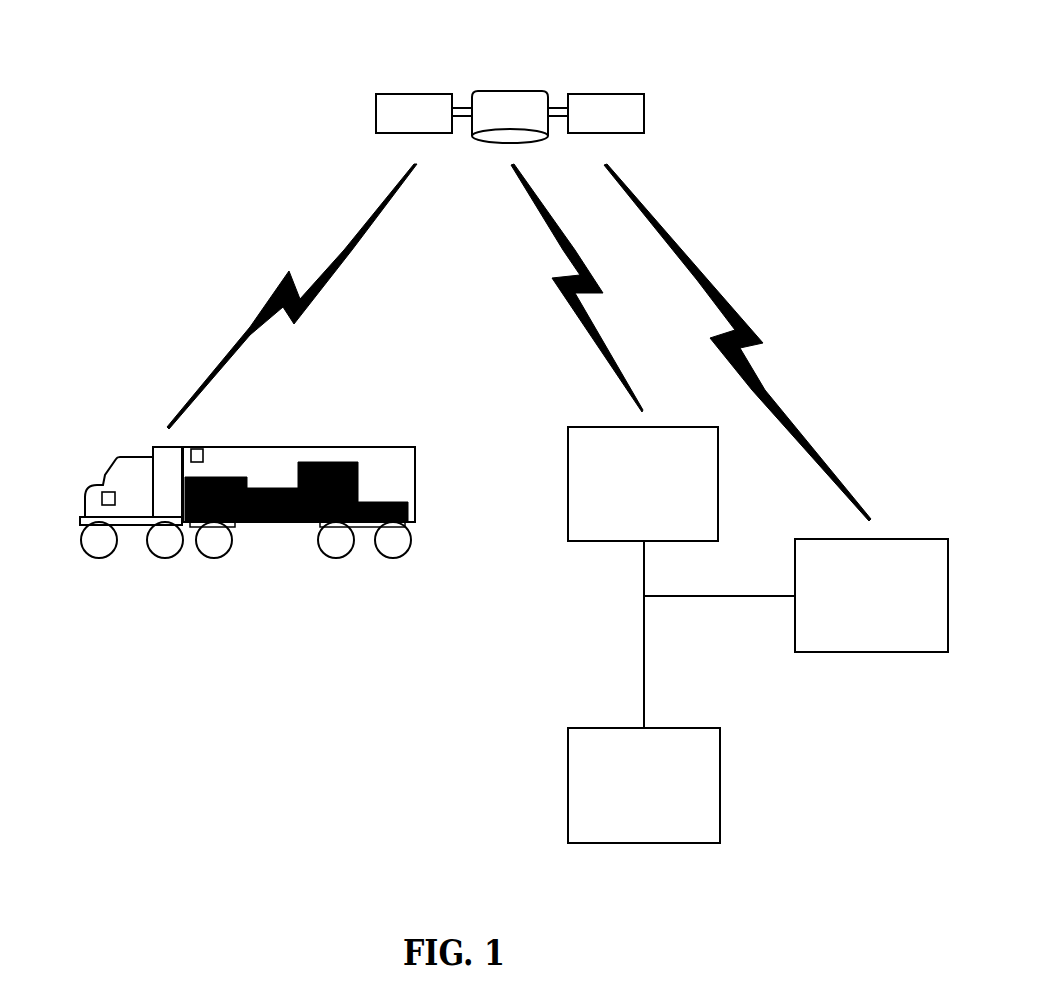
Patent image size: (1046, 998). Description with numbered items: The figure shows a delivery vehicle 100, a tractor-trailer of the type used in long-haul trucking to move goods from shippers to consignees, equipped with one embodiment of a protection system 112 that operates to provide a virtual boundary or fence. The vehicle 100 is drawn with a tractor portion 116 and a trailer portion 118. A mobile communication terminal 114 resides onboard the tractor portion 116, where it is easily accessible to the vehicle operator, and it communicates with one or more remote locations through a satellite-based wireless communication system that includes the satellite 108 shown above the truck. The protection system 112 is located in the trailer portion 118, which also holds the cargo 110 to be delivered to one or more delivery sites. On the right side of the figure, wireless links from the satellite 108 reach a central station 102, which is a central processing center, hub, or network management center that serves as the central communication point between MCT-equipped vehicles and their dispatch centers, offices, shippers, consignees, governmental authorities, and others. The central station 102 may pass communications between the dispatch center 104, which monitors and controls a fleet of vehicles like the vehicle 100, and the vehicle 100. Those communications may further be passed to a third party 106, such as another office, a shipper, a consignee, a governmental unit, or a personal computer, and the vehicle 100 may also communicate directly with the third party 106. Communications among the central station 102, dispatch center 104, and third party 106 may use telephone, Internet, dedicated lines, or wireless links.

The delivery vehicle 100 is at (288, 522).
The central station 102 is at (587, 427).
The dispatch center 104 is at (607, 728).
The third party 106 is at (833, 652).
The satellite 108 is at (518, 89).
The cargo 110 is at (342, 483).
The protection system 112 is at (202, 447).
The mobile communication terminal (MCT) 114 is at (108, 492).
The tractor portion 116 is at (140, 522).
The trailer portion 118 is at (341, 522).